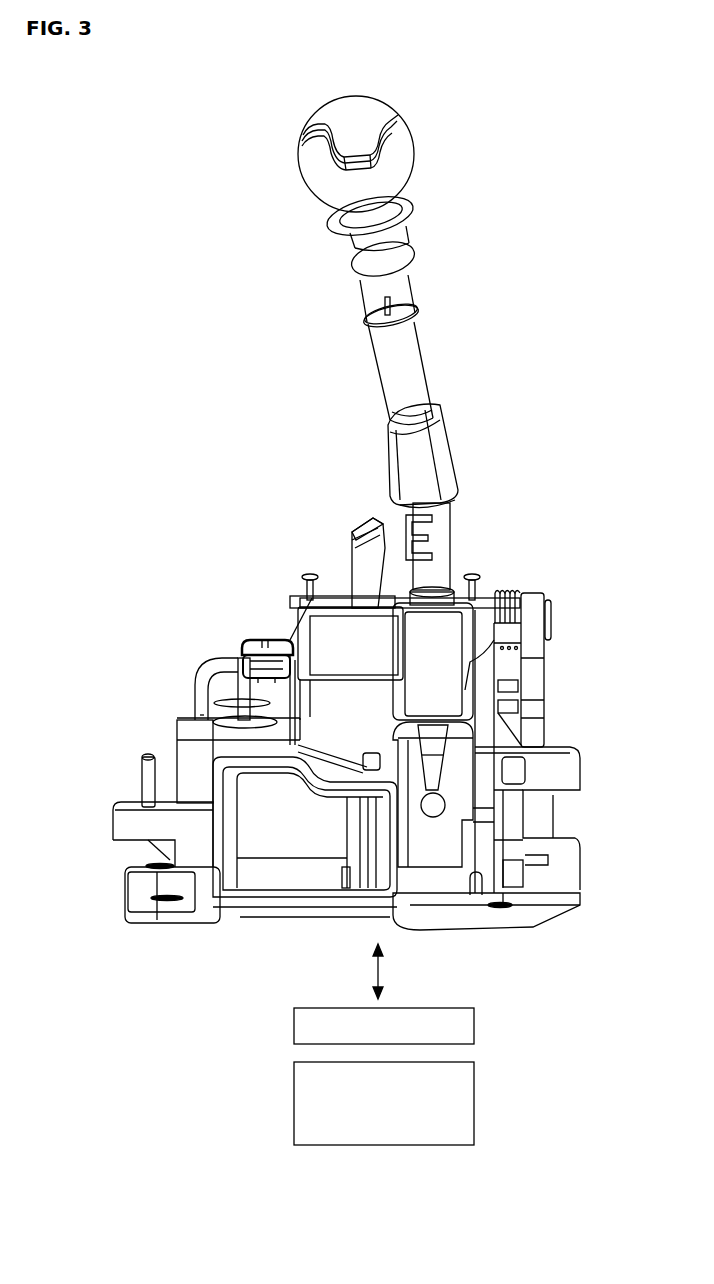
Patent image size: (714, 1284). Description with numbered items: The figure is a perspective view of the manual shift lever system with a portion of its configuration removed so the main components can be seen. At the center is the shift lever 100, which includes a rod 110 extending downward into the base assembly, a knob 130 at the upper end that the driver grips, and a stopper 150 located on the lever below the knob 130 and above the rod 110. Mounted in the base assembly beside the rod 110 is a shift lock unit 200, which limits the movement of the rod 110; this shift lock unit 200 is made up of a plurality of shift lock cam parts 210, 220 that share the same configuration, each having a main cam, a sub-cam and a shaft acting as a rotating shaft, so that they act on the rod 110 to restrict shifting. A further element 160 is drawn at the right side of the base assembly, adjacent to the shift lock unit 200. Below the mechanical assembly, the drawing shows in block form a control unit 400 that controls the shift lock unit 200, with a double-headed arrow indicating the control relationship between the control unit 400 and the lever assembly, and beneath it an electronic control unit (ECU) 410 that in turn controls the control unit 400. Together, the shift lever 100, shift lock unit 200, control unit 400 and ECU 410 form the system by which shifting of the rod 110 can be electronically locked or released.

The shift lever 100 is at (447, 342).
The rod 110 is at (440, 545).
The knob 130 is at (405, 148).
The stopper 150 is at (395, 523).
The return spring block 160 is at (548, 632).
The shift lock unit 200 is at (310, 486).
The shift lock cam part 210 is at (358, 546).
The shift lock cam part 220 is at (366, 524).
The control unit 400 is at (474, 1026).
The electronic control unit (ECU) 410 is at (474, 1103).